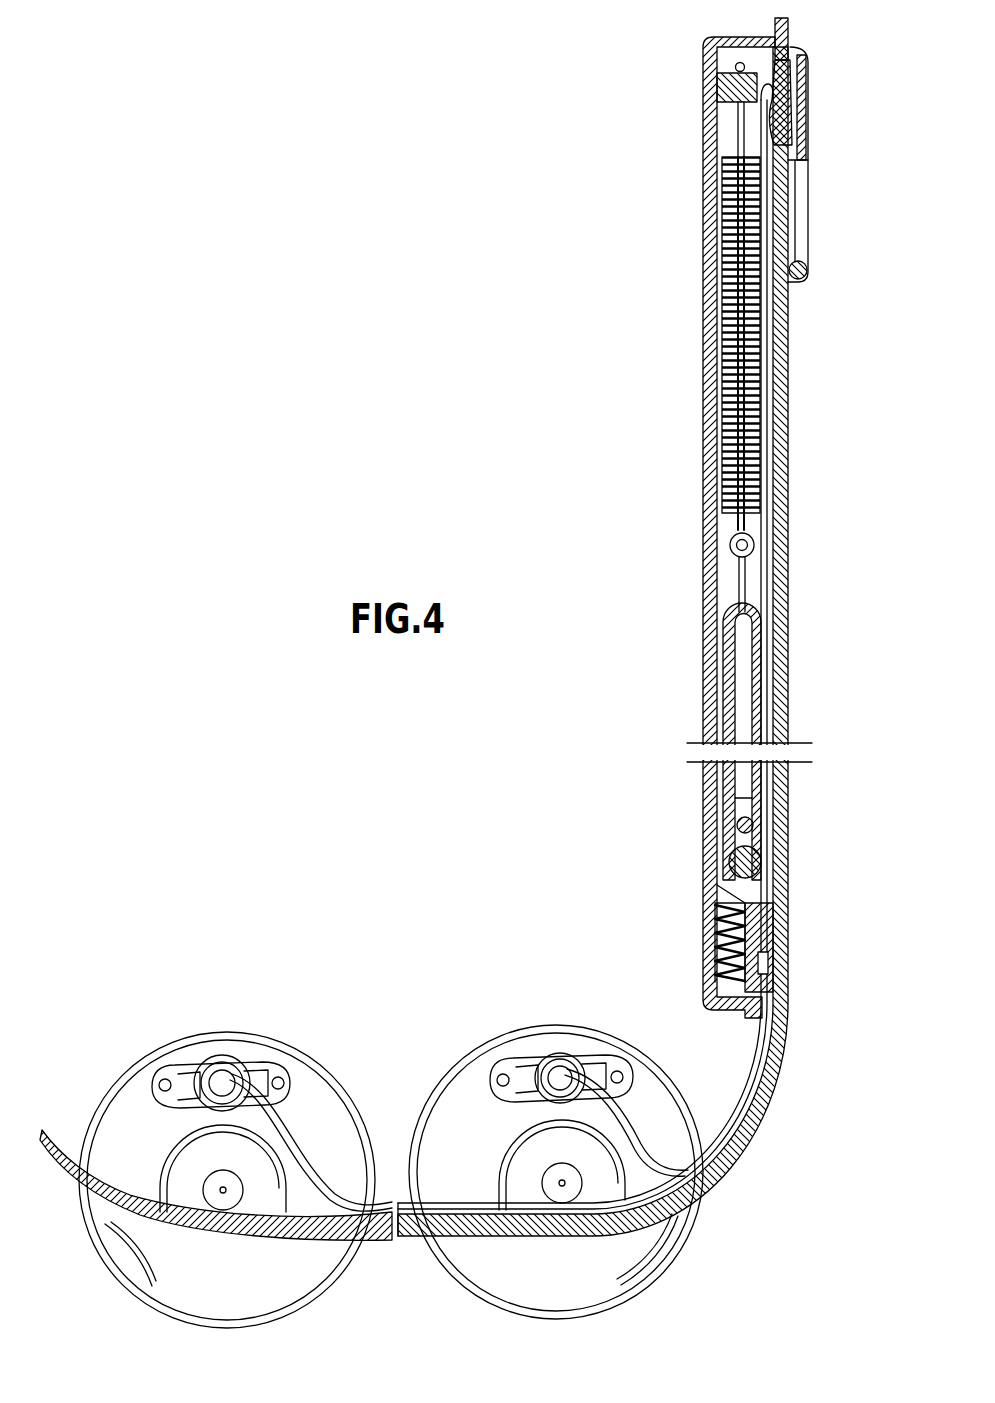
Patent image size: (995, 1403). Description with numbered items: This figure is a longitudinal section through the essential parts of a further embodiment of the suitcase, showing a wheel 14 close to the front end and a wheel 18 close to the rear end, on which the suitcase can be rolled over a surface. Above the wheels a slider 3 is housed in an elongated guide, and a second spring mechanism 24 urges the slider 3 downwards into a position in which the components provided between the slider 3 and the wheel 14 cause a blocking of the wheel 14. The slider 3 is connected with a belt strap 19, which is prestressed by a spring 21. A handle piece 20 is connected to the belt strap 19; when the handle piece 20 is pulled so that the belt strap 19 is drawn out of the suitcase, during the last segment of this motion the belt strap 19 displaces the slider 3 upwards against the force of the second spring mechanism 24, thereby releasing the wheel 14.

The slider 3 is at (786, 932).
The wheel 14 is at (645, 1266).
The wheel 18 is at (142, 1272).
The belt strap 19 is at (745, 117).
The handle piece 20 is at (800, 226).
The spring 21 is at (720, 437).
The second spring mechanism 24 is at (712, 942).